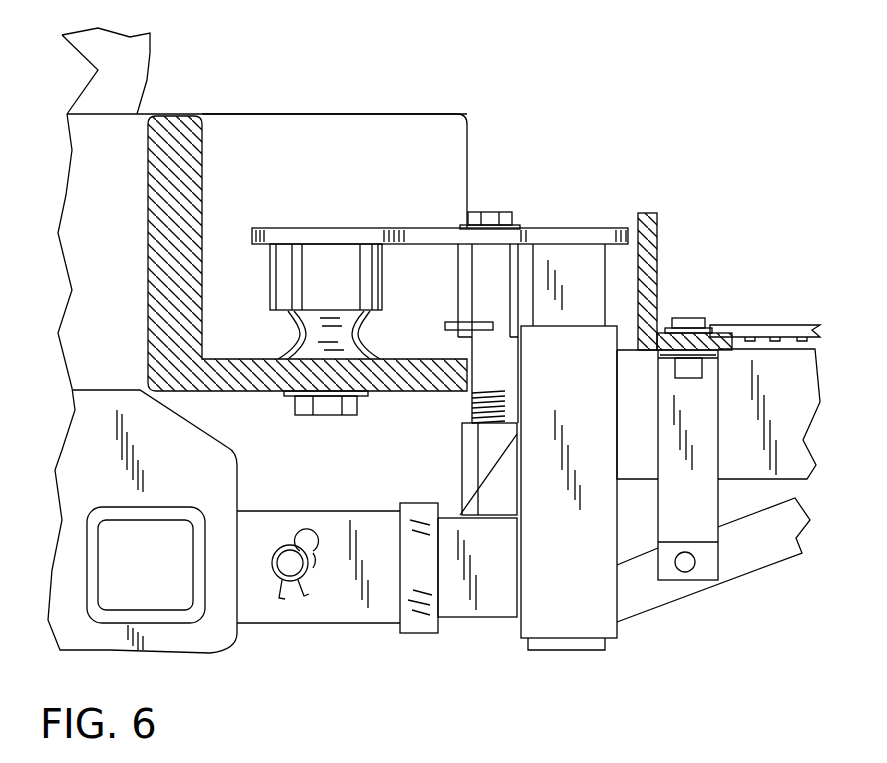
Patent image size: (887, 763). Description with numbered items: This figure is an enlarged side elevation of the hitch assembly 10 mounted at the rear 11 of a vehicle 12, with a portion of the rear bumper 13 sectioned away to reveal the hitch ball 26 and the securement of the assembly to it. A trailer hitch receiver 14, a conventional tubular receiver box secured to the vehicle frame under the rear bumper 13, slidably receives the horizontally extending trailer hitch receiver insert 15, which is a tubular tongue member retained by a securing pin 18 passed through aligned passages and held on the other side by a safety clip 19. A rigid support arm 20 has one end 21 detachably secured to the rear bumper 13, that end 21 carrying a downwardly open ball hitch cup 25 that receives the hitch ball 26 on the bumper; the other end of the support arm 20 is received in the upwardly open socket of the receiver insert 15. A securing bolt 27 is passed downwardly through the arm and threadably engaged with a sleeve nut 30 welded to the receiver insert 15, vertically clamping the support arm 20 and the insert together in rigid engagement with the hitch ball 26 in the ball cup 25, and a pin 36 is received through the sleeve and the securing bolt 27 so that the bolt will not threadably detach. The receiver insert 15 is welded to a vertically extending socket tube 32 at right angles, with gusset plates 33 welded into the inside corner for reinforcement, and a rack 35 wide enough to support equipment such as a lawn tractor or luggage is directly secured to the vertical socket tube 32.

The hitch assembly 10 is at (580, 165).
The rear 11 is at (150, 52).
The vehicle 12 is at (140, 98).
The rear bumper 13 is at (202, 183).
The trailer hitch receiver 14 is at (347, 623).
The trailer hitch receiver insert 15 is at (465, 617).
The securing pin 18 is at (290, 560).
The safety clip 19 is at (318, 540).
The support arm 20 is at (378, 226).
The end 21 is at (251, 240).
The ball hitch cup 25 is at (270, 300).
The hitch ball 26 is at (290, 322).
The securing bolt 27 is at (500, 212).
The sleeve nut 30 is at (463, 456).
The socket tube 32 is at (598, 578).
The gusset plates 33 is at (500, 493).
The rack 35 is at (773, 370).
The pin 36 is at (480, 322).